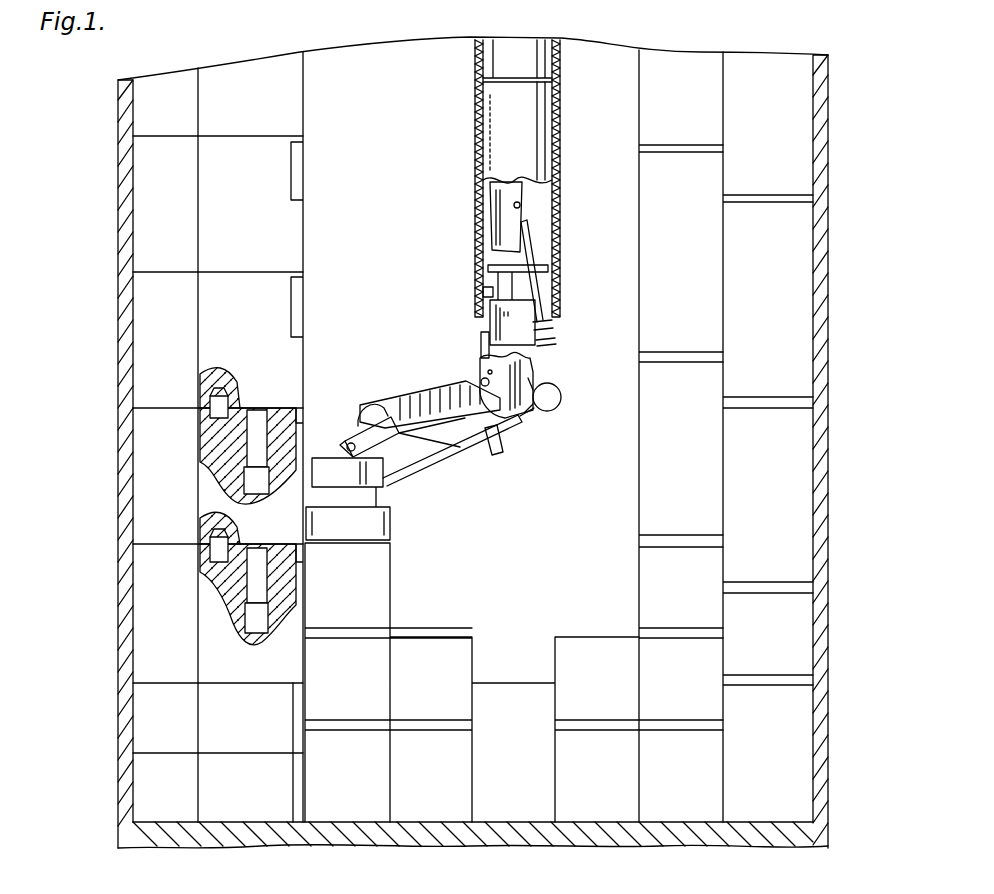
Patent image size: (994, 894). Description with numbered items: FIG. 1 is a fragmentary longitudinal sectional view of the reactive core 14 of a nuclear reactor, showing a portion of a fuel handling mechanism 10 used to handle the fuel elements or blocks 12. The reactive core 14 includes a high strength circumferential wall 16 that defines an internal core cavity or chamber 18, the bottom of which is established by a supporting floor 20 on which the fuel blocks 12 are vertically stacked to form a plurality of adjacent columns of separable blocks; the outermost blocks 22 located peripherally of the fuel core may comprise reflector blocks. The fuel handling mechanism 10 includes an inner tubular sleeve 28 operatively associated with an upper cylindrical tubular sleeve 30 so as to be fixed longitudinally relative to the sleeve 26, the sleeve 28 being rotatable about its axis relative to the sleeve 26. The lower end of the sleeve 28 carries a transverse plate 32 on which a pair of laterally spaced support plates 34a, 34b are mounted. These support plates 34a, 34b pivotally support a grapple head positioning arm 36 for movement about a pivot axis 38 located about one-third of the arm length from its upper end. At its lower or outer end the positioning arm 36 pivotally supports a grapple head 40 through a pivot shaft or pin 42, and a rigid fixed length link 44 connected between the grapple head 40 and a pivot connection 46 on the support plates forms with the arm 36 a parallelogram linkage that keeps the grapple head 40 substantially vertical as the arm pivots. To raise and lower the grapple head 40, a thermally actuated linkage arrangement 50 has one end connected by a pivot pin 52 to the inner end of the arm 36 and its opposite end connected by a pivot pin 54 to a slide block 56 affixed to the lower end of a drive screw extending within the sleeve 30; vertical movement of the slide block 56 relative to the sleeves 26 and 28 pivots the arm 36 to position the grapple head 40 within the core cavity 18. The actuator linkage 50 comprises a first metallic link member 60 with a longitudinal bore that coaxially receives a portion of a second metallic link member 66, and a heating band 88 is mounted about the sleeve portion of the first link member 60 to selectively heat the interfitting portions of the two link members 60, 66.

The fuel handling mechanism 10 is at (397, 353).
The fuel elements or blocks 12 is at (291, 317).
The reactive core 14 is at (112, 513).
The circumferential wall 16 is at (128, 648).
The core cavity or chamber 18 is at (150, 290).
The supporting floor 20 is at (372, 838).
The reflector blocks 22 is at (160, 162).
The sleeve 26 is at (557, 225).
The inner tubular sleeve 28 is at (540, 145).
The upper cylindrical tubular sleeve 30 is at (525, 60).
The transverse plate 32 is at (490, 300).
The support plate 34a is at (520, 418).
The support plate 34b is at (482, 345).
The grapple head positioning arm 36 is at (413, 397).
The pivot axis 38 is at (480, 377).
The grapple head 40 is at (425, 513).
The pivot shaft or pin 42 is at (345, 438).
The rigid fixed length link 44 is at (432, 457).
The pivot connection 46 is at (513, 432).
The thermally actuated linkage arrangement 50 is at (563, 354).
The pivot pin 52 is at (558, 398).
The pivot pin 54 is at (520, 207).
The slide block 56 is at (505, 220).
The first metallic link member 60 is at (562, 368).
The second metallic link member 66 is at (548, 290).
The heating band 88 is at (548, 333).